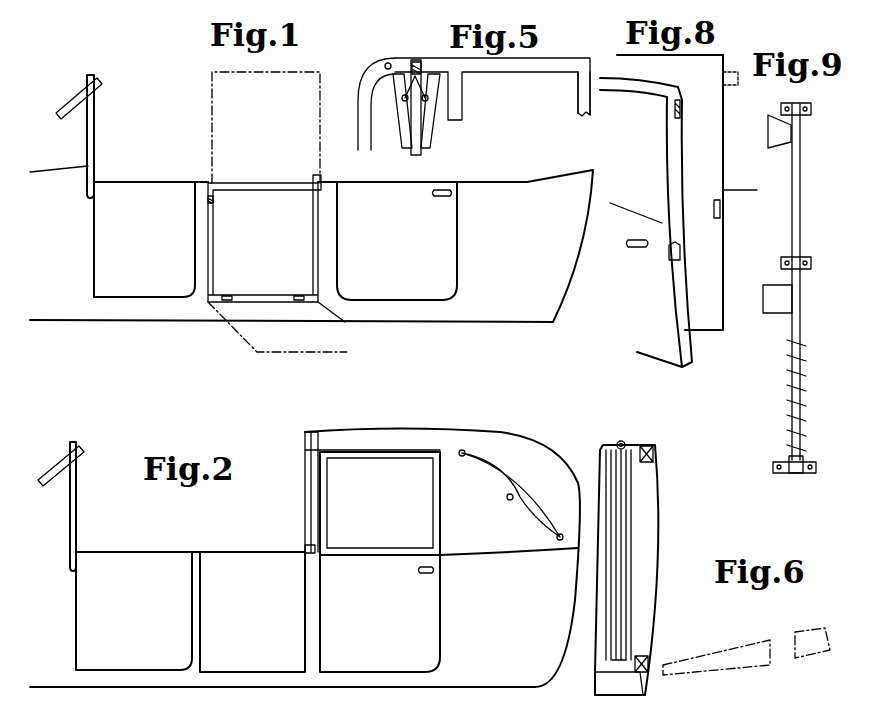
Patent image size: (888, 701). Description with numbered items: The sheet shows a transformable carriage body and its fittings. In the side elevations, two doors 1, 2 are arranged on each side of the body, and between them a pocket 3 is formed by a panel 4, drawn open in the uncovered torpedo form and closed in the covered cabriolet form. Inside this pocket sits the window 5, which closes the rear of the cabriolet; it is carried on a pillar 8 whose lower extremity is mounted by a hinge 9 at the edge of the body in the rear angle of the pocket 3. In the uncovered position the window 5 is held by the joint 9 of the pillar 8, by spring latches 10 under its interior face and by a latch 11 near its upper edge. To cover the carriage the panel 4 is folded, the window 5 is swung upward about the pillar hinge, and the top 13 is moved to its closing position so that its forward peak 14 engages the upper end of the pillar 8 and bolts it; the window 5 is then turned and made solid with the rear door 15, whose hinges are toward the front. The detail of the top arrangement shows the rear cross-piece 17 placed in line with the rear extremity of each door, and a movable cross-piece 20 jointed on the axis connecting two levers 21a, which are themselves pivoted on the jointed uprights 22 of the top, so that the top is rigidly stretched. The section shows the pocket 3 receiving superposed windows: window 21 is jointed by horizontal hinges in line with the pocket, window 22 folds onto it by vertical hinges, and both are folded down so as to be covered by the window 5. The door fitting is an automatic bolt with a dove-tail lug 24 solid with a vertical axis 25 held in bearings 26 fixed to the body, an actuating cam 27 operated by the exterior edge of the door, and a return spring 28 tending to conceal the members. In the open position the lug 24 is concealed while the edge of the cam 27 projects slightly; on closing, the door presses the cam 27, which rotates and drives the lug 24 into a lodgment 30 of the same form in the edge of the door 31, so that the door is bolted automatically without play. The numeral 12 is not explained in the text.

In FIG. 1, the door 1 is at (149, 189).
In FIG. 1, the door 2 is at (420, 189).
In FIG. 2, the pocket 3 is at (242, 546).
In FIG. 1, the panel 4 is at (348, 352).
In FIG. 2, the panel 4 is at (205, 562).
In FIG. 1, the window 5 is at (264, 187).
In FIG. 2, the window 5 is at (380, 503).
In FIG. 6, the window 5 is at (628, 547).
In FIG. 2, the pillar 8 is at (308, 490).
In FIG. 1, the hinge 9 is at (321, 178).
In FIG. 2, the hinge 9 is at (305, 551).
In FIG. 6, the hinge 9 is at (622, 441).
In FIG. 1, the spring latches 10 is at (227, 301).
In FIG. 1, the latch 11 is at (207, 195).
In FIG. 1, the ramp 12 is at (330, 192).
In FIG. 2, the top 13 is at (408, 440).
In FIG. 2, the forward peak 14 is at (306, 437).
In FIG. 2, the rear door 15 is at (380, 613).
In FIG. 5, the rear cross-piece 17 is at (579, 94).
In FIG. 5, the movable cross-piece 20 is at (421, 144).
In FIG. 6, the window 21 is at (619, 465).
In FIG. 5, the levers 21a is at (440, 53).
In FIG. 5, the window 22 is at (404, 126).
In FIG. 6, the window 22 is at (630, 495).
In FIG. 9, the dove-tail lug 24 is at (775, 133).
In FIG. 9, the vertical axis 25 is at (796, 208).
In FIG. 9, the bearings 26 is at (810, 115).
In FIG. 8, the actuating cam 27 is at (720, 215).
In FIG. 9, the actuating cam 27 is at (770, 298).
In FIG. 9, the return spring 28 is at (789, 354).
In FIG. 8, the lodgment 30 is at (675, 108).
In FIG. 8, the door 31 is at (646, 222).